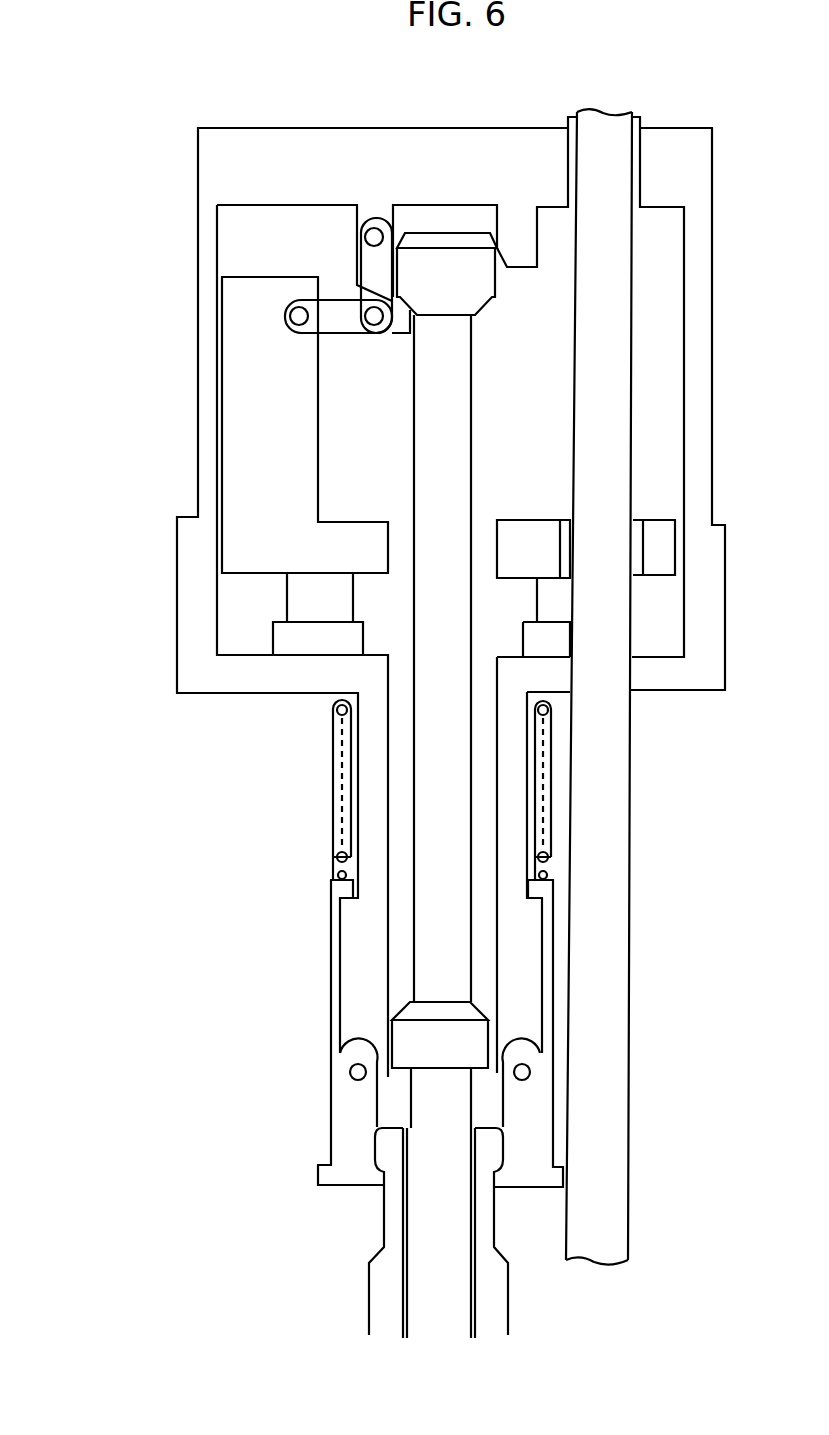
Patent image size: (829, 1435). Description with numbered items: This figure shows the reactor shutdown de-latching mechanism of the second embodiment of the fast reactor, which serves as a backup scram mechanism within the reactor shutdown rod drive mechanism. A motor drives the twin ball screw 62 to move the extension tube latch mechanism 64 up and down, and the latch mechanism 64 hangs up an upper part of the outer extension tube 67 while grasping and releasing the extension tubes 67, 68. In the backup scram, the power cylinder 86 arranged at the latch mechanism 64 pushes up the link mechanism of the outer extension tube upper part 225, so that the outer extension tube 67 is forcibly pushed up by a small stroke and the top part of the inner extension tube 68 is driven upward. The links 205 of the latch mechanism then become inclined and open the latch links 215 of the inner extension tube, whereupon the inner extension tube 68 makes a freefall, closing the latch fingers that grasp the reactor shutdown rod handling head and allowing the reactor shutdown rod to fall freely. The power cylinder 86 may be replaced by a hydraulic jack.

The twin ball screw 62 is at (617, 819).
The latch mechanism 64 is at (353, 1117).
The outer extension tube 67 is at (382, 1280).
The inner extension tube 68 is at (428, 433).
The power cylinder 86 is at (288, 602).
The links 205 is at (338, 320).
The latch links 215 is at (373, 270).
The outer extension tube upper part 225 is at (247, 458).